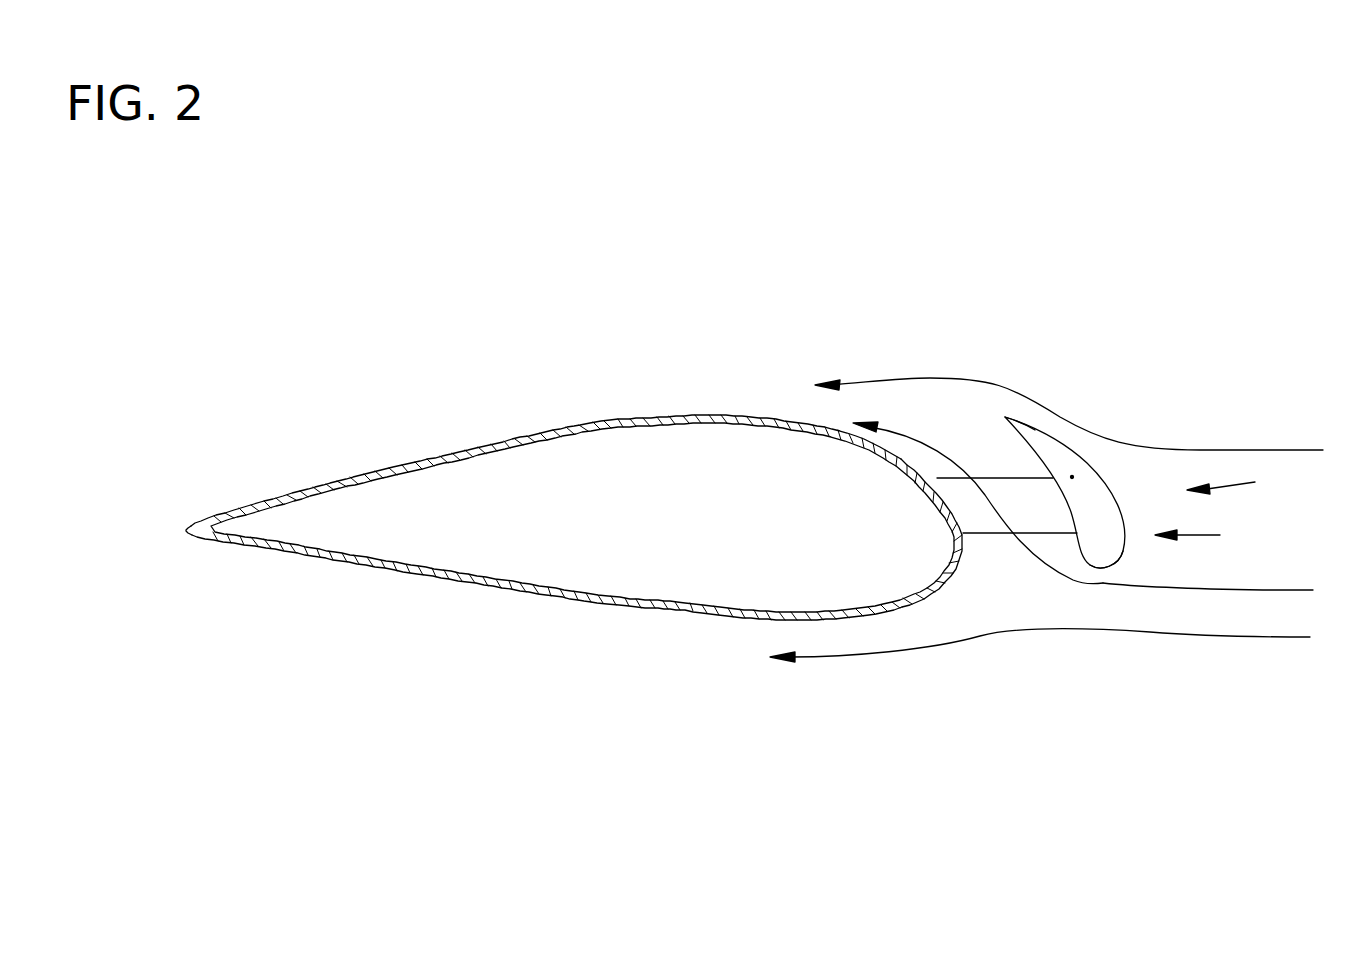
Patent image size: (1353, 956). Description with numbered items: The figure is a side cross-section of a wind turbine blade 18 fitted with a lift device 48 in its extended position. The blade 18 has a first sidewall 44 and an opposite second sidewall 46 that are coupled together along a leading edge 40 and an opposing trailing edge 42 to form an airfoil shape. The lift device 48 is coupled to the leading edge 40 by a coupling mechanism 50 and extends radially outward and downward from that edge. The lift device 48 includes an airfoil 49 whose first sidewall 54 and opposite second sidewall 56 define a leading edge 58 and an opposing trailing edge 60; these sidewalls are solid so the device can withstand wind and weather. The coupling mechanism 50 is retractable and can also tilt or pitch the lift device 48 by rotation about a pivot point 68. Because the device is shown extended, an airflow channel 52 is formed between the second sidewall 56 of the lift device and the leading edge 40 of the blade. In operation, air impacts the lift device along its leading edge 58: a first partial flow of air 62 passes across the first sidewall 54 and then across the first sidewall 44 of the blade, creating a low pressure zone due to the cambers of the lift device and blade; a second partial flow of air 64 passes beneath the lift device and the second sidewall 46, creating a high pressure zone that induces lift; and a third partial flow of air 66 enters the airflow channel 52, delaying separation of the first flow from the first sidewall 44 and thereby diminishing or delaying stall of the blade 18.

The blade 18 is at (240, 264).
The leading edge 40 is at (967, 540).
The trailing edge 42 is at (190, 522).
The first sidewall 44 is at (515, 440).
The second sidewall 46 is at (445, 575).
The lift device 48 is at (1240, 481).
The airfoil 49 is at (1205, 534).
The coupling mechanism 50 is at (990, 477).
The airflow channel 52 is at (1012, 570).
The first sidewall 54 is at (1105, 485).
The second sidewall 56 is at (1065, 510).
The leading edge 58 is at (1117, 558).
The trailing edge 60 is at (1005, 418).
The first partial flow of air 62 is at (1262, 450).
The second partial flow of air 64 is at (1262, 637).
The third partial flow of air 66 is at (1262, 588).
The pivot point 68 is at (1072, 477).